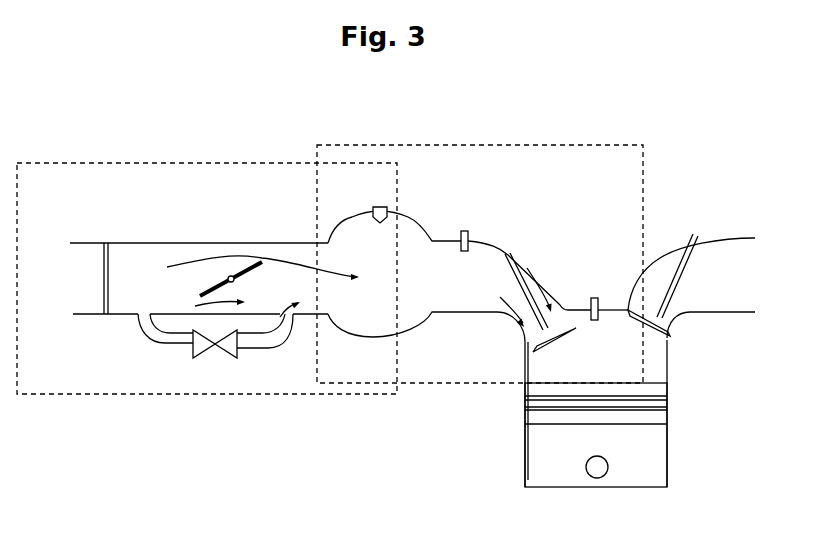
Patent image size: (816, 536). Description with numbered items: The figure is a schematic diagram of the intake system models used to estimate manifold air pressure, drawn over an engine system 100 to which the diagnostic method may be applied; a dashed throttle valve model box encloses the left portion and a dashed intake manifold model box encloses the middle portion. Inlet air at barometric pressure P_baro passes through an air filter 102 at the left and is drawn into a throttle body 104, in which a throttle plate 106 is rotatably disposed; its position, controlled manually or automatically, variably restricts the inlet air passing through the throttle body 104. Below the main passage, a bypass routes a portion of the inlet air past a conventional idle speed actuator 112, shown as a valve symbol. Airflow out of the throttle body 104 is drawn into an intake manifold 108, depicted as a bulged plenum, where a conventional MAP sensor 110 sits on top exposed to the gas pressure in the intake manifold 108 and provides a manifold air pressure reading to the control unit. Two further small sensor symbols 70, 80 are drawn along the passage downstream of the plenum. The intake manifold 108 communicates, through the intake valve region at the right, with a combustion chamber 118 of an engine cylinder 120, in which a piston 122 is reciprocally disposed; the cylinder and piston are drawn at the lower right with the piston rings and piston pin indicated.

The engine system 100 is at (313, 412).
The air filter 102 is at (103, 243).
The throttle body 104 is at (231, 240).
The throttle plate 106 is at (258, 260).
The intake manifold 108 is at (347, 219).
The MAP sensor 110 is at (375, 206).
The sensor 70 is at (463, 231).
The sensor 80 is at (592, 298).
The idle speed actuator 112 is at (212, 362).
The combustion chamber 118 is at (537, 362).
The engine cylinder 120 is at (680, 389).
The piston 122 is at (665, 462).